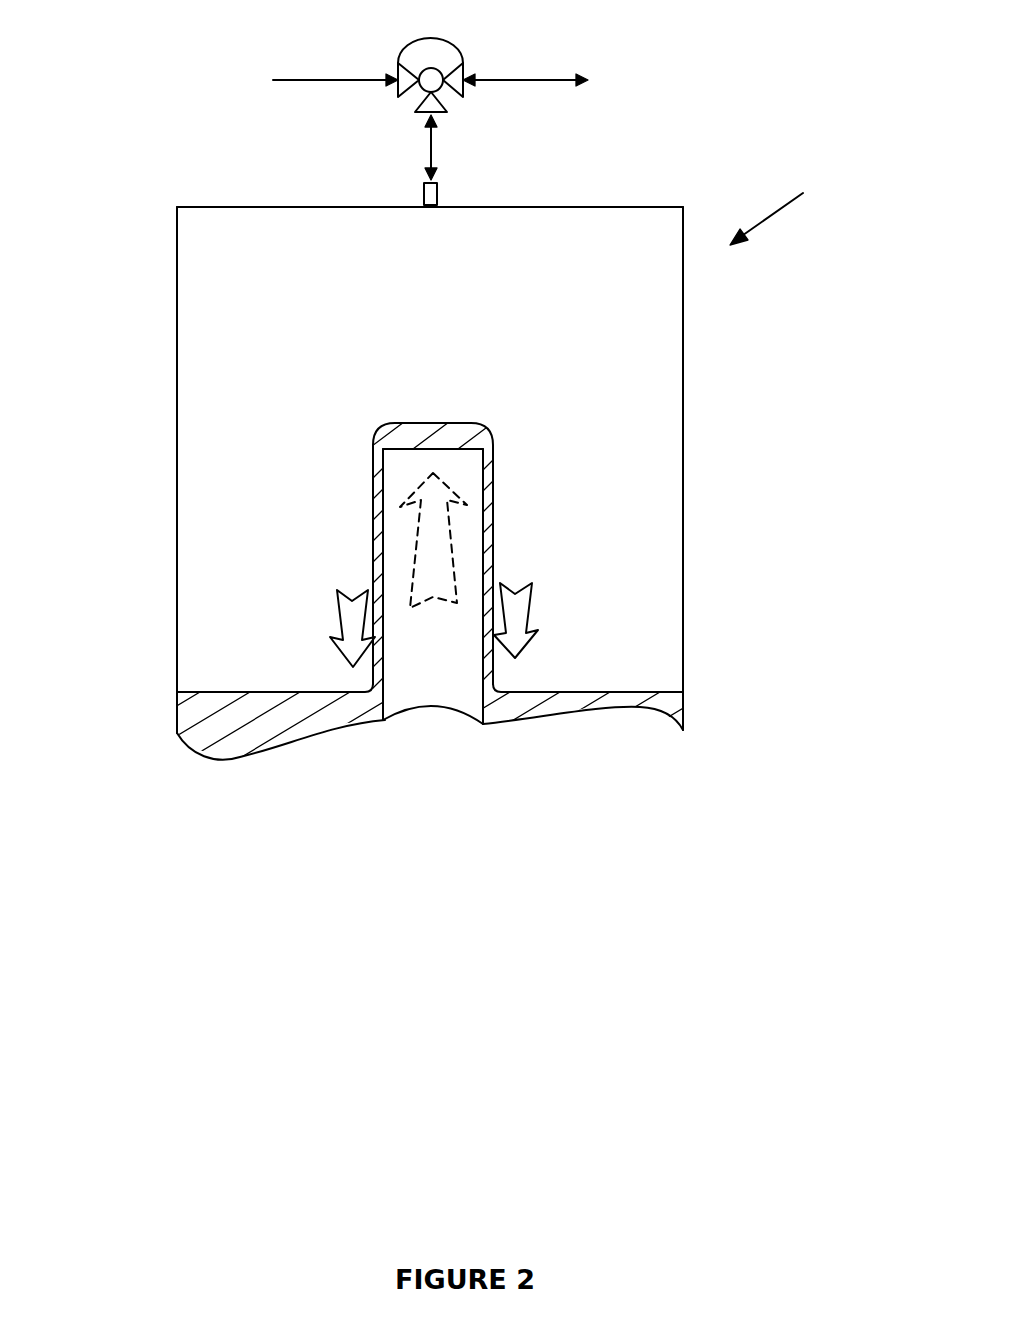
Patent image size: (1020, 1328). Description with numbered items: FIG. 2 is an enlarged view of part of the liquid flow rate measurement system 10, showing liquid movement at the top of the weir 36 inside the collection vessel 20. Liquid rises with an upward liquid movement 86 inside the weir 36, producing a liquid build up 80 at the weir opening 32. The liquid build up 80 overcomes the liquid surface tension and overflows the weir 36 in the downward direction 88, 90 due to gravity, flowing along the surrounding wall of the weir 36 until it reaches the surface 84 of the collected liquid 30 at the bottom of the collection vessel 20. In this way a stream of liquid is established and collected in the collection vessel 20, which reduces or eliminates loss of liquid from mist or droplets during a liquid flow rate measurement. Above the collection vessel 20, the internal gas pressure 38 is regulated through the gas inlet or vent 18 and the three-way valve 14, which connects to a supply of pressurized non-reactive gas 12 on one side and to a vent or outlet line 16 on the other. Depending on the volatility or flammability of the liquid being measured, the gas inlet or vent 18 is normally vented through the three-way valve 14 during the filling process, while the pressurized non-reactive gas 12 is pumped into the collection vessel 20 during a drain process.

The fuel system 10 is at (779, 206).
The pressurized non-reactive gas 12 is at (283, 80).
The three-way valve 14 is at (408, 40).
The outlet line 16 is at (532, 80).
The gas inlet or vent 18 is at (424, 195).
The collection vessel 20 is at (377, 456).
The collected liquid 30 is at (410, 711).
The weir opening 32 is at (403, 449).
The weir 36 is at (438, 529).
The internal gas pressure 38 is at (200, 333).
The liquid build up 80 is at (437, 422).
The surface of the collected liquid 84 is at (260, 692).
The upward liquid movement 86 is at (433, 540).
The downward direction 88 is at (352, 615).
The downward direction 90 is at (516, 610).